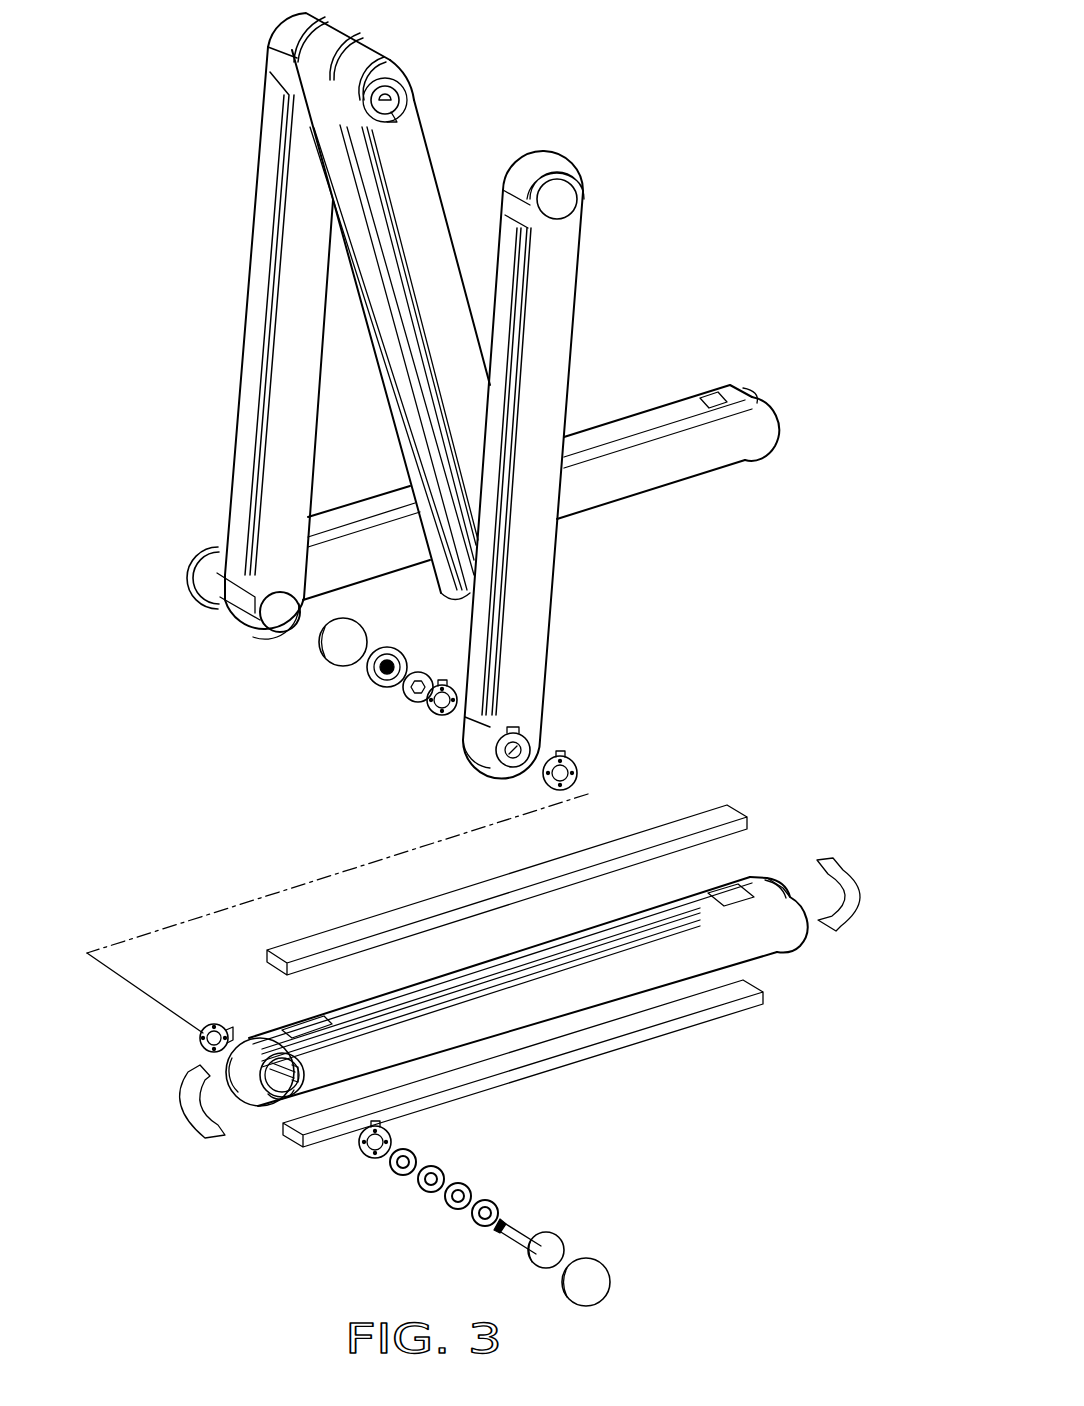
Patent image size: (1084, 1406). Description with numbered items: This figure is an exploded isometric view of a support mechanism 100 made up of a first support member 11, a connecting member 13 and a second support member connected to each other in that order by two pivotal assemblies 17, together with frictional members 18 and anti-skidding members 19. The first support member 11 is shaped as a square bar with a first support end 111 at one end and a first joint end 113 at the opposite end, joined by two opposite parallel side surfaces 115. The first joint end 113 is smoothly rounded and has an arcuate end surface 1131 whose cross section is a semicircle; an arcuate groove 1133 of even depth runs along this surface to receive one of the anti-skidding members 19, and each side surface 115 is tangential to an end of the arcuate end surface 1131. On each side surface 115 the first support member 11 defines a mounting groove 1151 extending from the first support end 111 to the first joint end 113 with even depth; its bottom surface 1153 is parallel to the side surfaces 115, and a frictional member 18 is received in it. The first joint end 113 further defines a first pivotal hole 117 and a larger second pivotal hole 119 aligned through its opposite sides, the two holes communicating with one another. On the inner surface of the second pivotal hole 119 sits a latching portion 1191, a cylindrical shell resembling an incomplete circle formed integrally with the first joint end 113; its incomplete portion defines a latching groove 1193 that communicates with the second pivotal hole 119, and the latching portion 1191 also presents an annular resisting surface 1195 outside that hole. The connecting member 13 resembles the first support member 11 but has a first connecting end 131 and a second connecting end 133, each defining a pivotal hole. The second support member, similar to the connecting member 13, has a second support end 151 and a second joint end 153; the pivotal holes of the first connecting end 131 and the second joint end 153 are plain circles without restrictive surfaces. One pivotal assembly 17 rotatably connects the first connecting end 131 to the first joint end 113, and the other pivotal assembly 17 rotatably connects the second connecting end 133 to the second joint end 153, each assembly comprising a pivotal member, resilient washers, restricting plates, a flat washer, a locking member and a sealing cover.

The supporting apparatus 100 is at (592, 31).
The first support member 11 is at (496, 1014).
The first support end 111 is at (775, 925).
The first joint end 113 is at (206, 1046).
The side surfaces 115 is at (756, 882).
The first pivotal hole 117 is at (399, 101).
The second pivotal hole 119 is at (407, 1130).
The arcuate end surface 1131 is at (258, 1090).
The arcuate groove 1133 is at (247, 1078).
The mounting groove 1151 is at (380, 1008).
The bottom surface 1153 is at (323, 1027).
The latching portion 1191 is at (296, 1096).
The latching groove 1193 is at (304, 1064).
The annular resisting surface 1195 is at (270, 1097).
The connecting member 13 is at (530, 541).
The first connecting end 131 is at (540, 722).
The second connecting end 133 is at (562, 199).
The second support end 151 is at (460, 596).
The second joint end 153 is at (395, 114).
The pivotal assemblies 17 is at (572, 1213).
The frictional members 18 is at (640, 1035).
The anti-skidding members 19 is at (862, 910).